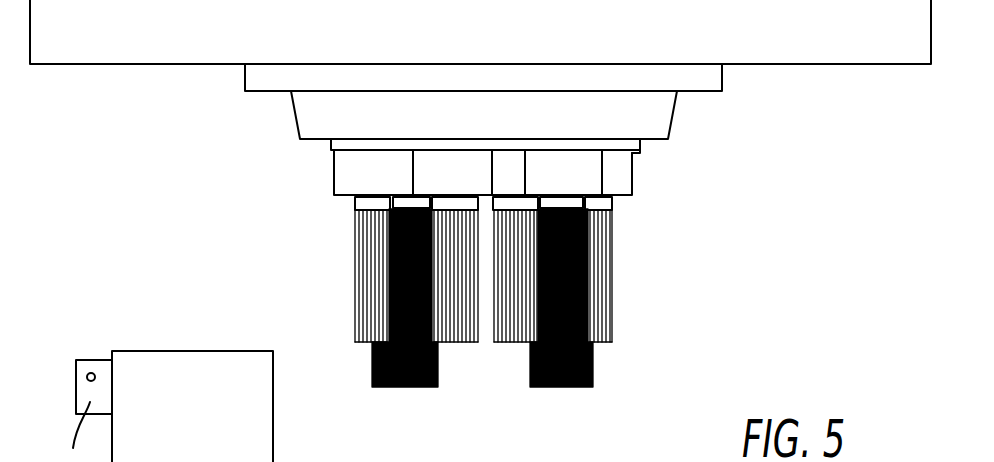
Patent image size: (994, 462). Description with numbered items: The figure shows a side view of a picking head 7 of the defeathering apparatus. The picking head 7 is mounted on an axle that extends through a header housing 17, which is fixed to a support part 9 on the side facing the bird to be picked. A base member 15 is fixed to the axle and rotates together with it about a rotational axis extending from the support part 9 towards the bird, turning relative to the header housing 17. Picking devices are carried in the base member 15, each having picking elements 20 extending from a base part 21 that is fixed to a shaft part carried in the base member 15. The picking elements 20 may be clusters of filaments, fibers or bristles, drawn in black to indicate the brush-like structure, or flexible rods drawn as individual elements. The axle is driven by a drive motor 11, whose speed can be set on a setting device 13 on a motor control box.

The picking head 7 is at (283, 155).
The support part 9 is at (798, 50).
The drive motor 11 is at (224, 406).
The setting device 13 is at (92, 372).
The base member 15 is at (626, 143).
The header housing 17 is at (654, 115).
The picking elements 20 is at (468, 343).
The base part 21 is at (375, 201).